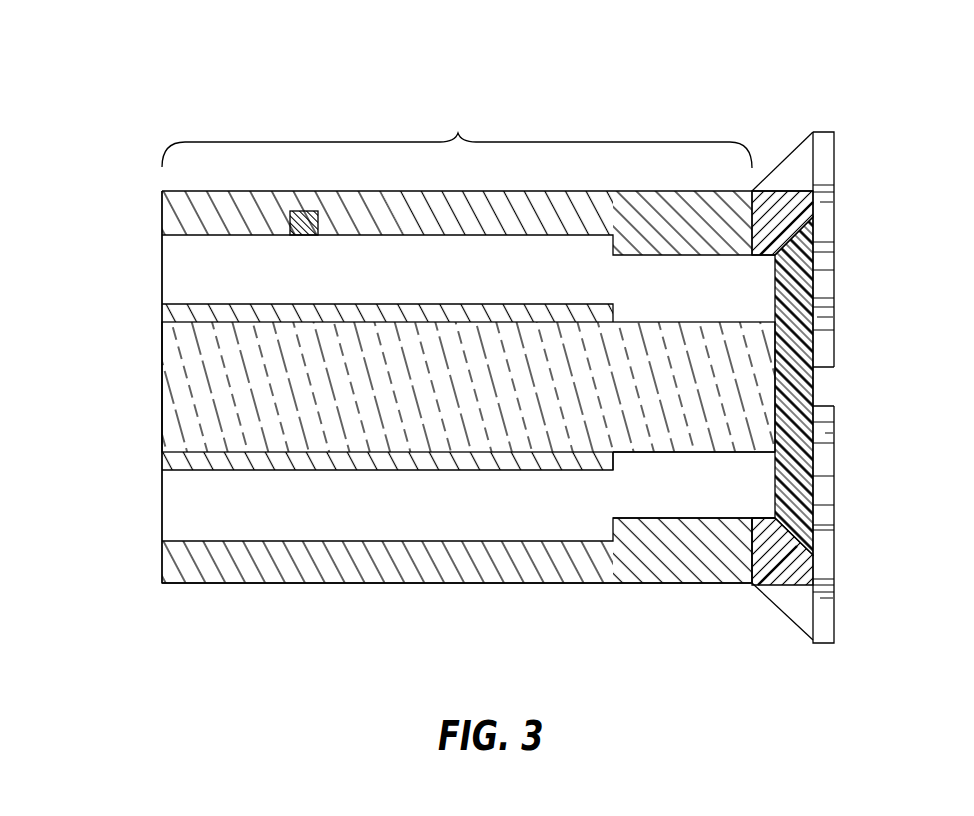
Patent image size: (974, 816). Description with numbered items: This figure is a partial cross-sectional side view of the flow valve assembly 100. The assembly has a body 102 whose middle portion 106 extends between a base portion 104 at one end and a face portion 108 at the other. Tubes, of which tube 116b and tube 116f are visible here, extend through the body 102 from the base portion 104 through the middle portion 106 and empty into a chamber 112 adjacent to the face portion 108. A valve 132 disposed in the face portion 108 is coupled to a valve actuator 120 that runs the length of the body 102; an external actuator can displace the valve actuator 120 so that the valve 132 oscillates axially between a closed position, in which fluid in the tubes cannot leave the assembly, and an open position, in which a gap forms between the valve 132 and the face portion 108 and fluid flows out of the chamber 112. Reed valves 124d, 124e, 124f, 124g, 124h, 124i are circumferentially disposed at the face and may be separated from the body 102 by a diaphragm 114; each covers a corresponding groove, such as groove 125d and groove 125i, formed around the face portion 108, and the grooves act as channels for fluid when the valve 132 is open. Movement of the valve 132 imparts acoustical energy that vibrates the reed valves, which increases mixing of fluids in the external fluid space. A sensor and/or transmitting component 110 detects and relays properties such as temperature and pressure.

The flow valve assembly 100 is at (92, 104).
The body 102 is at (458, 134).
The base portion 104 is at (162, 583).
The middle portion 106 is at (457, 583).
The face portion 108 is at (752, 583).
The sensor and/or transmitting component 110 is at (305, 211).
The chamber 112 is at (672, 498).
The diaphragm 114 is at (835, 546).
The tube 116b is at (182, 273).
The tube 116f is at (183, 502).
The valve actuator 120 is at (295, 359).
The reed valve 124d is at (835, 604).
The reed valve 124e is at (835, 493).
The reed valve 124f is at (835, 413).
The reed valve 124g is at (835, 353).
The reed valve 124h is at (835, 284).
The reed valve 124i is at (835, 187).
The groove 125d is at (785, 613).
The groove 125i is at (803, 140).
The valve 132 is at (795, 375).